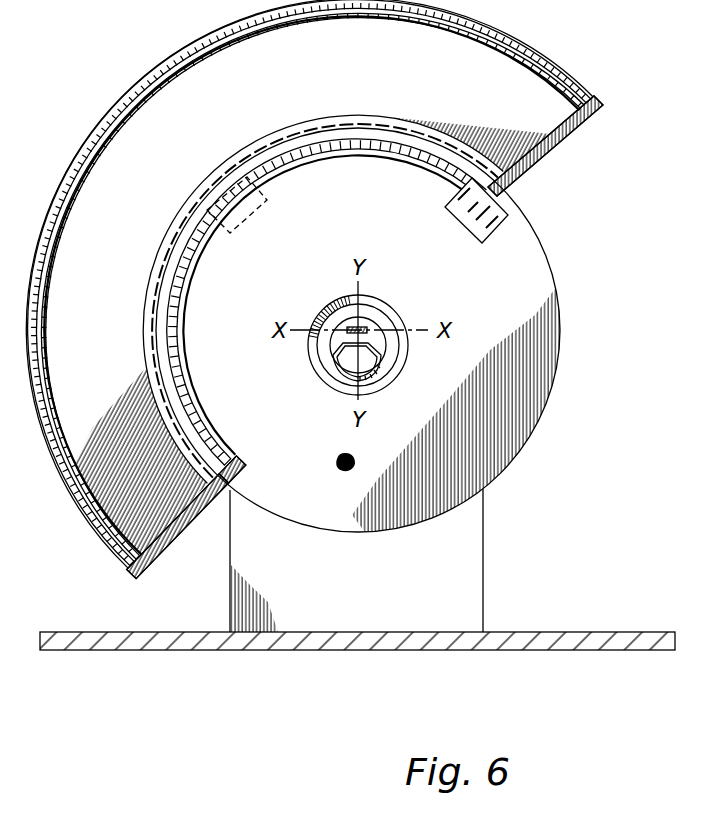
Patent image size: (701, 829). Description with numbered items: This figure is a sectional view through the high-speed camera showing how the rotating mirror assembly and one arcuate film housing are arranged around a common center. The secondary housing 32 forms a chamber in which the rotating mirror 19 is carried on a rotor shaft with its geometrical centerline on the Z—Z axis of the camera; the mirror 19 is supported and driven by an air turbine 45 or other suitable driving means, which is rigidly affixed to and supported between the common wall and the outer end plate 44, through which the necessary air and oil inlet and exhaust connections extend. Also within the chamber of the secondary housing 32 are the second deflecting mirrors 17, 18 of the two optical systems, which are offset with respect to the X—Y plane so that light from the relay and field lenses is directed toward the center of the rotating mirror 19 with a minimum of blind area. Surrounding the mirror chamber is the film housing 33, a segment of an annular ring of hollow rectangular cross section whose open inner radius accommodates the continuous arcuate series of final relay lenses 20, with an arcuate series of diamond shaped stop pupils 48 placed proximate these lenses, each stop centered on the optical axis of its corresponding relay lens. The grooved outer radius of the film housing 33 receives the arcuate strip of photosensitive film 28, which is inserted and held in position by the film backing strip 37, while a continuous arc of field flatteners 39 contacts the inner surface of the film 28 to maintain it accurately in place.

The second deflecting mirror 17 is at (265, 212).
The second deflecting mirror 18 is at (450, 210).
The rotating mirror 19 is at (362, 327).
The arcuate series of final relay lenses 20 is at (324, 147).
The arcuate strip of photosensitive film 28 is at (130, 94).
The secondary housing 32 is at (561, 353).
The film housing 33 is at (545, 159).
The film backing strip 37 is at (156, 68).
The continuous arc of field flatteners 39 is at (85, 171).
The outer end plate 44 is at (323, 450).
The air turbine 45 is at (344, 358).
The arcuate series of diamond shaped stop pupils 48 is at (247, 150).